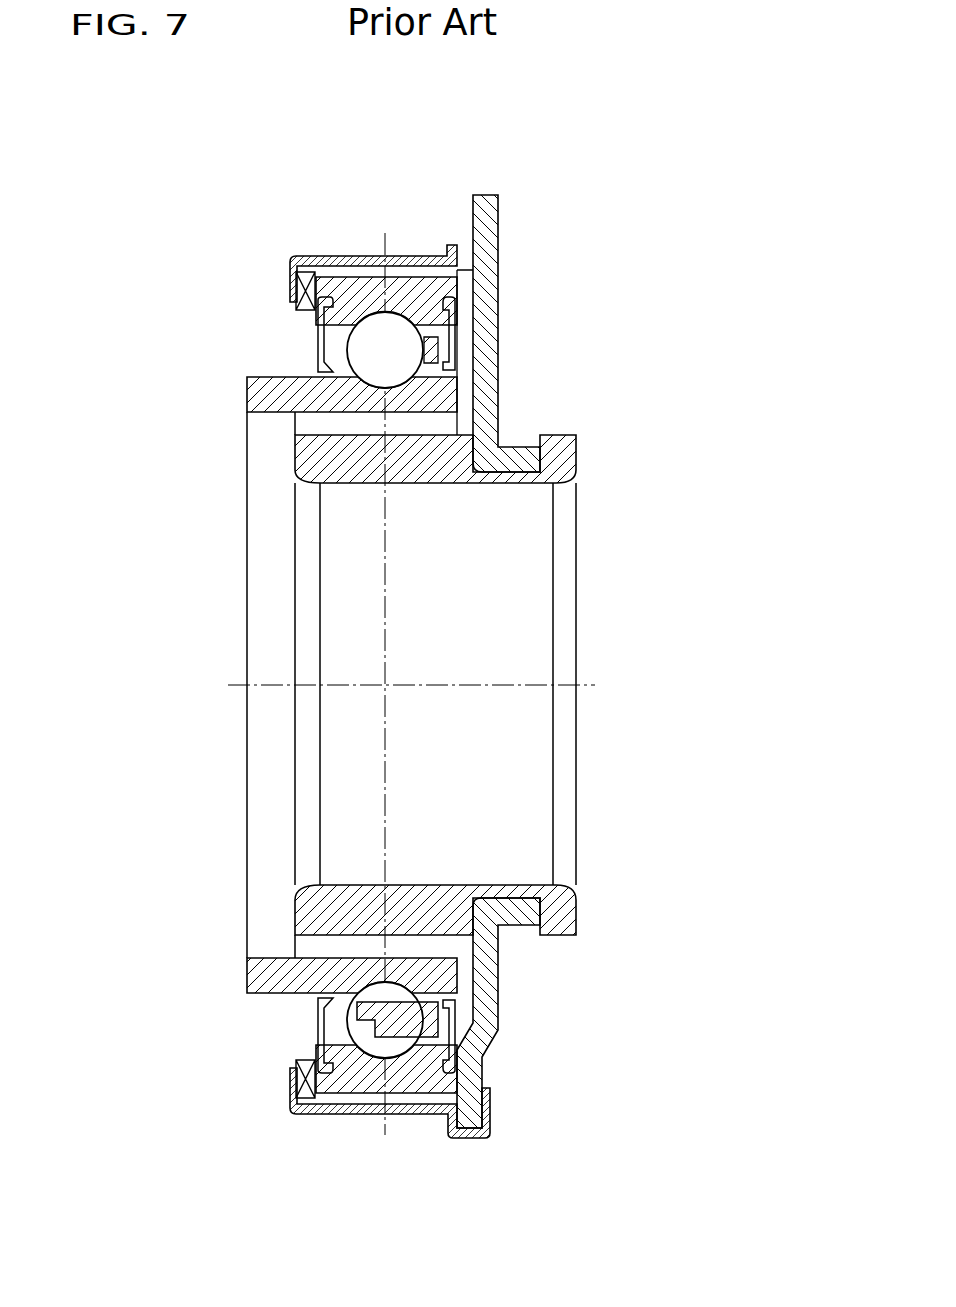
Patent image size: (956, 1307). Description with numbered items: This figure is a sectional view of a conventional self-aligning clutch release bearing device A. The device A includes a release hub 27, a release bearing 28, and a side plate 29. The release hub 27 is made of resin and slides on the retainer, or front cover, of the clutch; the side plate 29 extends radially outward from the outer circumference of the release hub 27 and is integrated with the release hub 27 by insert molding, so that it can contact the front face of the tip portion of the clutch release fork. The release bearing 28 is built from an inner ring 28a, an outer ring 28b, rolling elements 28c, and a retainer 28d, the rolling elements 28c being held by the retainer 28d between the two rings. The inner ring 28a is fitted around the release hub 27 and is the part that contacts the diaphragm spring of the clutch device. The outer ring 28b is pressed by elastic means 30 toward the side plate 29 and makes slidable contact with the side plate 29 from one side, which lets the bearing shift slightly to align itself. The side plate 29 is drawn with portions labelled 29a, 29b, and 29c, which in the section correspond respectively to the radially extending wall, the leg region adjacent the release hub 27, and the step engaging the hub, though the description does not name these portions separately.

The self-aligning clutch release bearing device A is at (345, 202).
The release hub 27 is at (347, 460).
The release bearing 28 is at (366, 653).
The inner ring 28a is at (262, 386).
The outer ring 28b is at (395, 295).
The rolling elements 28c is at (375, 352).
The retainer 28d is at (455, 330).
The side plate 29 is at (564, 649).
The cylindrical portion of flange 29a is at (490, 220).
The flange leg portion 29b is at (540, 455).
The engaging portion 29c is at (551, 425).
The elastic means 30 is at (275, 306).